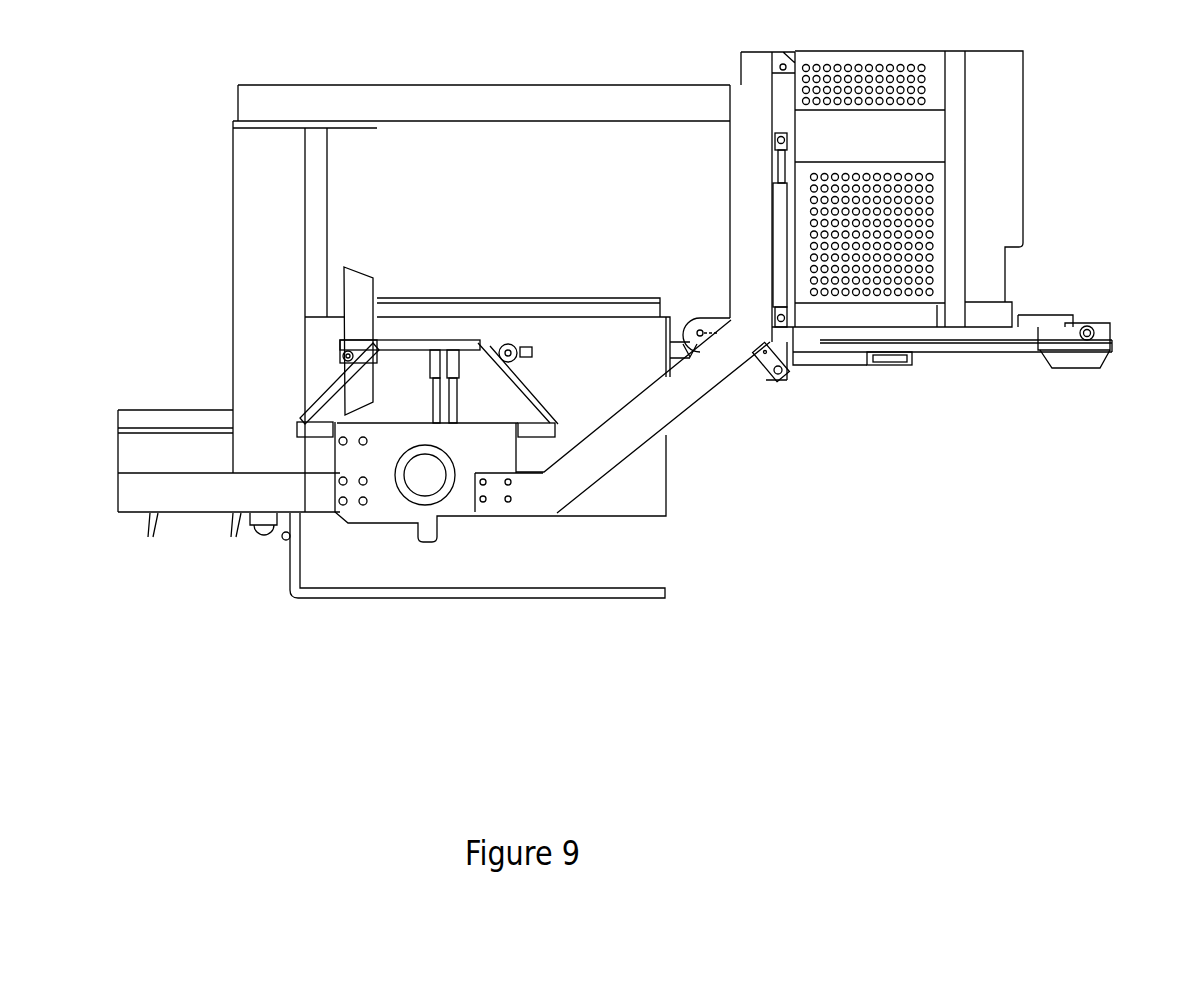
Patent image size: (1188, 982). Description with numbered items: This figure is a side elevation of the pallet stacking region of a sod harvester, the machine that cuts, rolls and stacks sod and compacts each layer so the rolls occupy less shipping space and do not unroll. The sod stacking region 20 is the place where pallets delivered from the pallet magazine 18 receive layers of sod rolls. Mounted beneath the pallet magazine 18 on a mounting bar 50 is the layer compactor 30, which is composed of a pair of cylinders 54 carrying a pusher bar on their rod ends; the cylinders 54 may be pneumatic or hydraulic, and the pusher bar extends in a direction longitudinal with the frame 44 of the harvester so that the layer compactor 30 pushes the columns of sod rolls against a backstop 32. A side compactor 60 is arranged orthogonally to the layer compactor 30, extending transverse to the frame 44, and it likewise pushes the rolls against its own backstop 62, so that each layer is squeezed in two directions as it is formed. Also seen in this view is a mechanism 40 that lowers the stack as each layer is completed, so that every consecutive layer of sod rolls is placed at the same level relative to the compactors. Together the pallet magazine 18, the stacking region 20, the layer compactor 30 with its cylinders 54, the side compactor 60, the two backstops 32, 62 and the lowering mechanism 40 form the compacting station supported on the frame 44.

The pallet magazine 18 is at (1044, 122).
The sod stacking region 20 is at (640, 563).
The layer compactor 30 is at (828, 395).
The backstop 32 is at (362, 262).
The mechanism 40 is at (365, 605).
The frame 44 is at (233, 165).
The mounting bar 50 is at (924, 364).
The cylinders 54 is at (864, 375).
The side compactor 60 is at (550, 335).
The backstop 62 is at (620, 288).